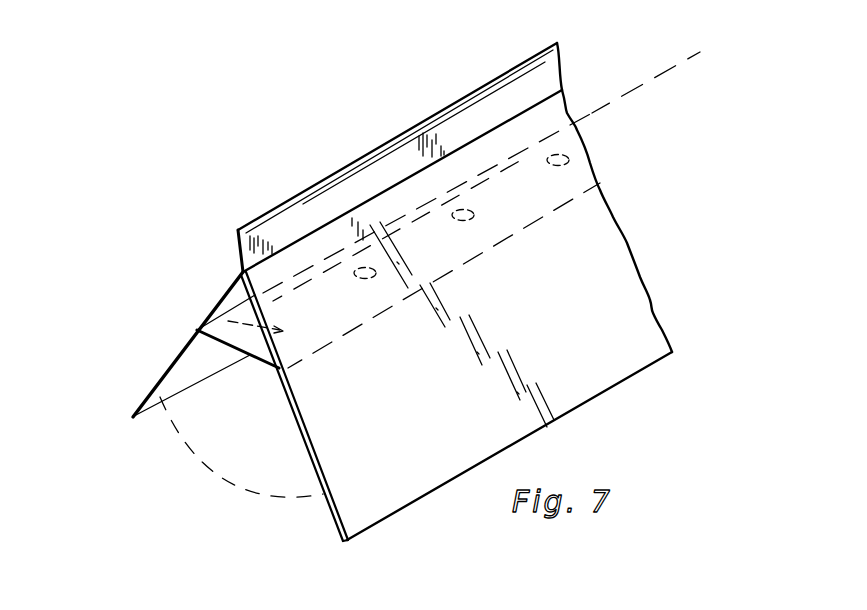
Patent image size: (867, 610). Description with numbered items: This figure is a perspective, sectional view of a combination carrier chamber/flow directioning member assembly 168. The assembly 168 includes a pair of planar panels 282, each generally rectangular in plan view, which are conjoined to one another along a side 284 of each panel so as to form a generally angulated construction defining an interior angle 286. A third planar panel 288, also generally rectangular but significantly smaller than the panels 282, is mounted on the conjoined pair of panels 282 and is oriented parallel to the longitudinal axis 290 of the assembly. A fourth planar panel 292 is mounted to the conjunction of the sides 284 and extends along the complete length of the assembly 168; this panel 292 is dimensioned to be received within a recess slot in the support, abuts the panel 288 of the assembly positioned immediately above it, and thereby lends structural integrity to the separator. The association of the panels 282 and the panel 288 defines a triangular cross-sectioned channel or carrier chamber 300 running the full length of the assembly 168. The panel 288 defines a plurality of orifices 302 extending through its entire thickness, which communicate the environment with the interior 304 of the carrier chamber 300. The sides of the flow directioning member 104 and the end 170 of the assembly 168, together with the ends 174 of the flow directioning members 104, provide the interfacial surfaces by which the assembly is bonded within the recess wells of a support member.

The flow directioning member 104 is at (576, 334).
The combination carrier chamber/flow directioning member assembly 168 is at (487, 311).
The end of the assembly 170 is at (163, 375).
The end of the flow directioning member 174 is at (340, 538).
The planar panel 282 is at (196, 333).
The side of panel 284 is at (387, 190).
The interior angle 286 is at (217, 473).
The third planar panel 288 is at (263, 372).
The longitudinal axis 290 is at (643, 83).
The fourth planar panel 292 is at (476, 110).
The carrier chamber 300 is at (230, 307).
The orifices 302 is at (284, 331).
The interior of carrier chamber 304 is at (262, 347).